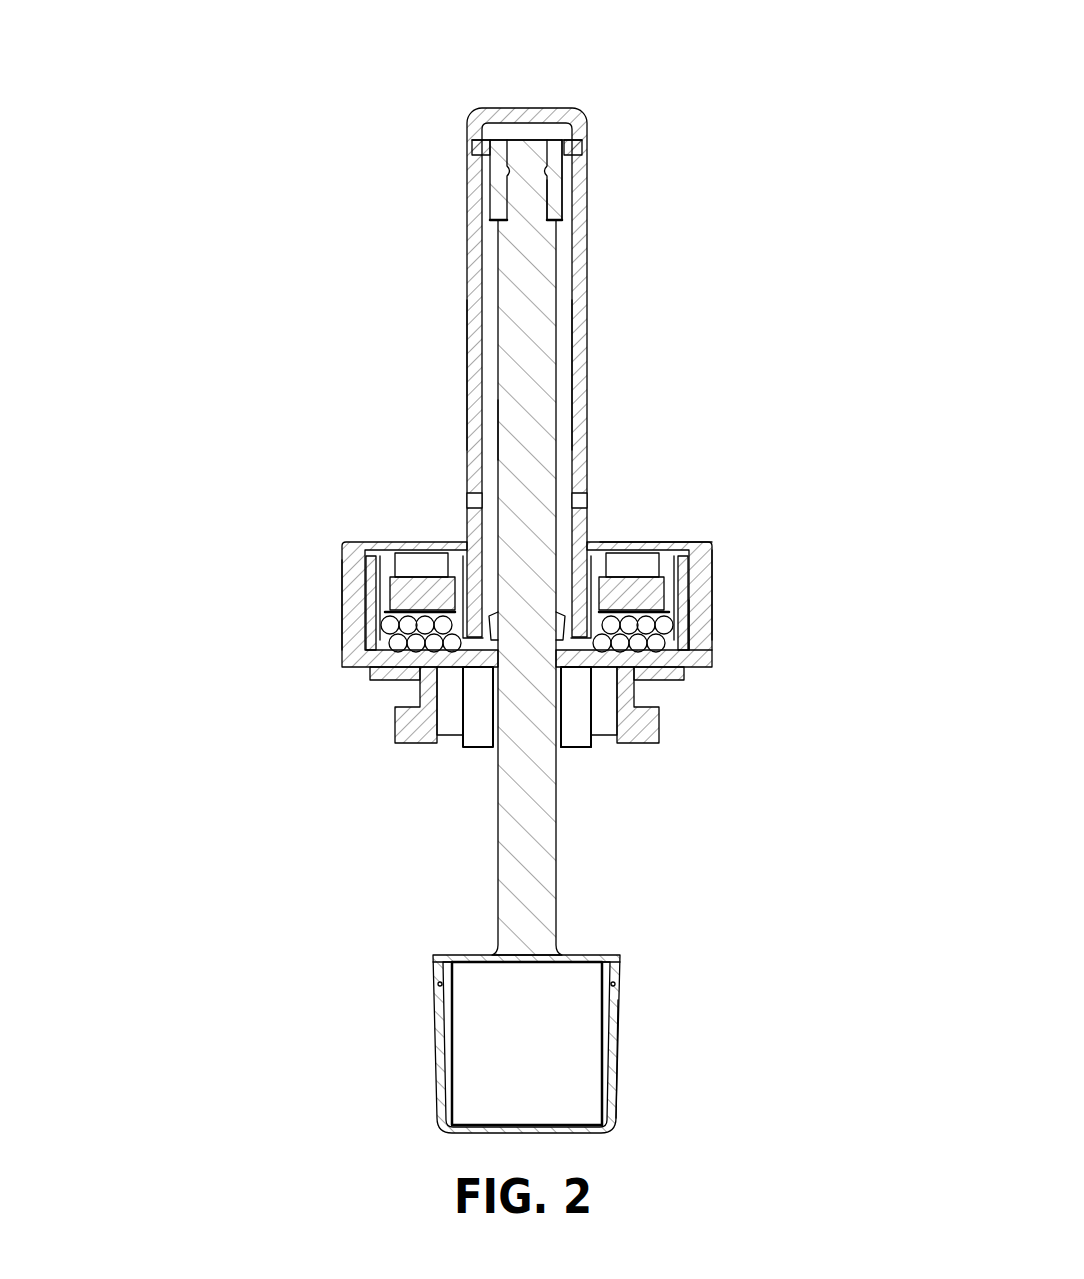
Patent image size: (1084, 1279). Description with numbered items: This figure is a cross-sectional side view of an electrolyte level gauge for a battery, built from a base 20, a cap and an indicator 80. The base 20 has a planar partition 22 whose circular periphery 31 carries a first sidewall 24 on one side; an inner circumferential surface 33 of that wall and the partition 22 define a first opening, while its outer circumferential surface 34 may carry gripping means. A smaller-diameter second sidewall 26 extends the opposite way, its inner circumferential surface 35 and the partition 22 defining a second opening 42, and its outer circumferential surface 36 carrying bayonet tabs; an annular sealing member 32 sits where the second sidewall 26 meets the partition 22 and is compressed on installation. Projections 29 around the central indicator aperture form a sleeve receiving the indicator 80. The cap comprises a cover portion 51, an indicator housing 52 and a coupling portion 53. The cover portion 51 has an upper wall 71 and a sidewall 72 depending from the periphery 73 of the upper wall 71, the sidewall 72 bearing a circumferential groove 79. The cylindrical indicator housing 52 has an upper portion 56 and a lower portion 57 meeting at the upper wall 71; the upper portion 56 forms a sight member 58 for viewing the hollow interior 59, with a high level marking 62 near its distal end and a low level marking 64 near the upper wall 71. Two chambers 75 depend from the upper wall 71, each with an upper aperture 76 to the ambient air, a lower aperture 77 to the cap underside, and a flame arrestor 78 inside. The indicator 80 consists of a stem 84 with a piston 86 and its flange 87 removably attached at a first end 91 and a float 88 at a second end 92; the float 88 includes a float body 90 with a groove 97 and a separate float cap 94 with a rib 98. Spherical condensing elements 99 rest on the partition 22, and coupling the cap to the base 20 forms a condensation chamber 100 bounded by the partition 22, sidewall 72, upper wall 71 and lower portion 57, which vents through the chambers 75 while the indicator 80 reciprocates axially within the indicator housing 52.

The base 20 is at (332, 675).
The partition 22 is at (692, 700).
The first sidewall 24 is at (700, 603).
The second sidewall 26 is at (400, 682).
The projections 29 is at (557, 635).
The periphery 31 is at (712, 655).
The annular sealing member 32 is at (712, 680).
The inner circumferential surface 33 is at (380, 555).
The outer circumferential surface 34 is at (345, 600).
The inner circumferential surface 35 is at (446, 748).
The outer circumferential surface 36 is at (400, 712).
The second opening 42 is at (603, 748).
The cover portion 51 is at (686, 524).
The indicator housing 52 is at (457, 374).
The coupling portion 53 is at (577, 760).
The upper portion 56 is at (583, 393).
The lower portion 57 is at (688, 735).
The sight member 58 is at (600, 232).
The hollow interior 59 is at (562, 373).
The high level marking 62 is at (473, 150).
The low level marking 64 is at (589, 497).
The upper wall 71 is at (648, 545).
The sidewall 72 is at (712, 605).
The periphery 73 is at (693, 542).
The chambers 75 is at (432, 556).
The upper aperture 76 is at (633, 545).
The lower aperture 77 is at (690, 618).
The flame arrestor 78 is at (385, 632).
The groove 79 is at (393, 558).
The indicator 80 is at (503, 322).
The stem 84 is at (510, 428).
The piston 86 is at (553, 207).
The flange 87 is at (562, 147).
The float 88 is at (416, 1052).
The float body 90 is at (613, 1005).
The first end 91 is at (525, 142).
The second end 92 is at (556, 945).
The float cap 94 is at (622, 1085).
The groove 97 is at (621, 982).
The rib 98 is at (437, 985).
The condensing elements 99 is at (392, 645).
The condensation chamber 100 is at (715, 645).